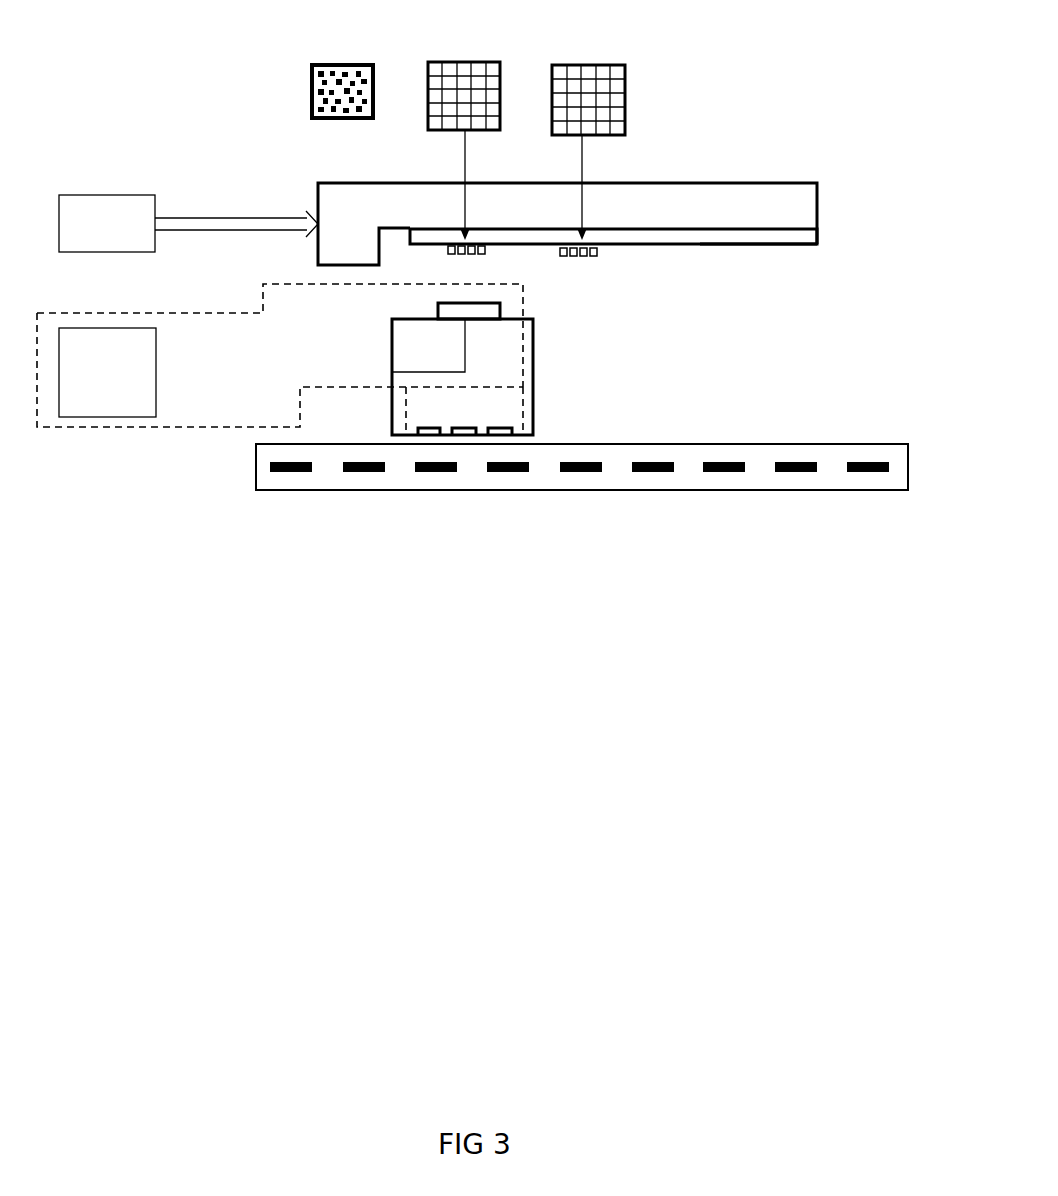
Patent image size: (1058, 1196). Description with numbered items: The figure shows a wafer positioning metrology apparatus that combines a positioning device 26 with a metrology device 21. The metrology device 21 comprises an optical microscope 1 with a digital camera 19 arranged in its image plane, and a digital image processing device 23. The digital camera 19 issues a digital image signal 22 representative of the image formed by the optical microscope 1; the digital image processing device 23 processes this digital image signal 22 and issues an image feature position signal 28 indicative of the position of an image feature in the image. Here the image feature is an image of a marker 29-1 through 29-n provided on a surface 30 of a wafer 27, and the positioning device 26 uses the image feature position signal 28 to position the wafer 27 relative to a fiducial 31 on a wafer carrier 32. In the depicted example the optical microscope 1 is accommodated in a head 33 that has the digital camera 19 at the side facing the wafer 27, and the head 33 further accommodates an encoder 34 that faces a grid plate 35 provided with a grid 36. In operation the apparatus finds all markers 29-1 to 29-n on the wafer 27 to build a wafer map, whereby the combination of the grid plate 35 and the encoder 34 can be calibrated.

The optical microscope 1 is at (501, 359).
The digital camera 19 is at (428, 311).
The metrology device 21 is at (302, 351).
The digital image signal 22 is at (465, 372).
The digital image processing device 23 is at (121, 386).
The positioning device 26 is at (121, 236).
The wafer 27 is at (824, 237).
The image feature position signal 28 is at (103, 262).
The marker 29-1 is at (508, 142).
The marker 29-n is at (588, 160).
The surface of the wafer 30 is at (792, 252).
The fiducial 31 is at (343, 248).
The wafer carrier 32 is at (824, 203).
The head 33 is at (545, 358).
The encoder 34 is at (472, 416).
The grid plate 35 is at (647, 497).
The grid 36 is at (248, 463).